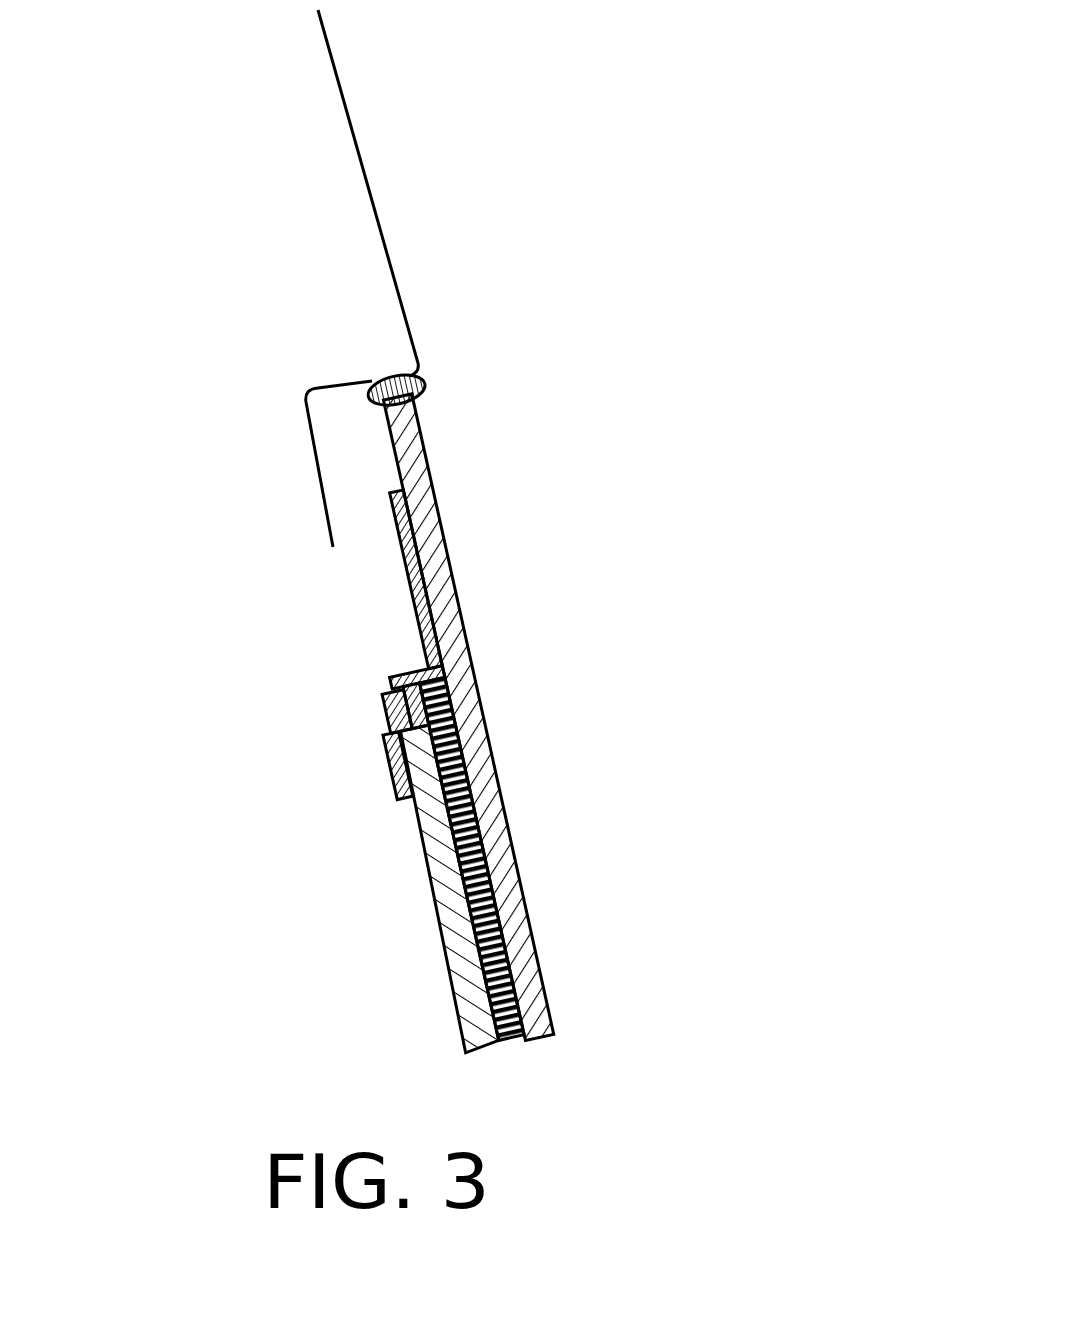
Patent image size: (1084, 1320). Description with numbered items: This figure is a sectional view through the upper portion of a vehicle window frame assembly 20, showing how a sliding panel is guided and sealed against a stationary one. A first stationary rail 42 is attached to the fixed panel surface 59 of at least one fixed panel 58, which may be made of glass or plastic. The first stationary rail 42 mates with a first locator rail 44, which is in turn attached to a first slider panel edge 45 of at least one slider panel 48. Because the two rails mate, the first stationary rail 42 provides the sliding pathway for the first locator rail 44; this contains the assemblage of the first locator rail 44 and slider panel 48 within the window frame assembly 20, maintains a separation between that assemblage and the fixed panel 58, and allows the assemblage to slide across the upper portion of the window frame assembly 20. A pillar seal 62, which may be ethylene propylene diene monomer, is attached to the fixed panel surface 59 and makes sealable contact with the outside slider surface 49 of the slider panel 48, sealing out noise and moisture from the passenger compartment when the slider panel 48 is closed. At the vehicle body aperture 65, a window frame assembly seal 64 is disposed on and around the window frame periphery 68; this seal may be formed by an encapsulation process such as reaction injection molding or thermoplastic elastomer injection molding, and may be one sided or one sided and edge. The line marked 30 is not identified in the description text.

The window frame assembly 20 is at (642, 801).
The panel 30 is at (376, 181).
The first stationary rail 42 is at (418, 618).
The first locator rail 44 is at (385, 787).
The first slider panel edge 45 is at (382, 717).
The slider panel 48 is at (457, 943).
The outside slider surface 49 is at (500, 1056).
The fixed panel 58 is at (447, 552).
The fixed panel surface 59 is at (407, 441).
The pillar seal 62 is at (500, 926).
The window frame assembly seal 64 is at (386, 378).
The vehicle body aperture 65 is at (527, 323).
The window frame periphery 68 is at (372, 398).